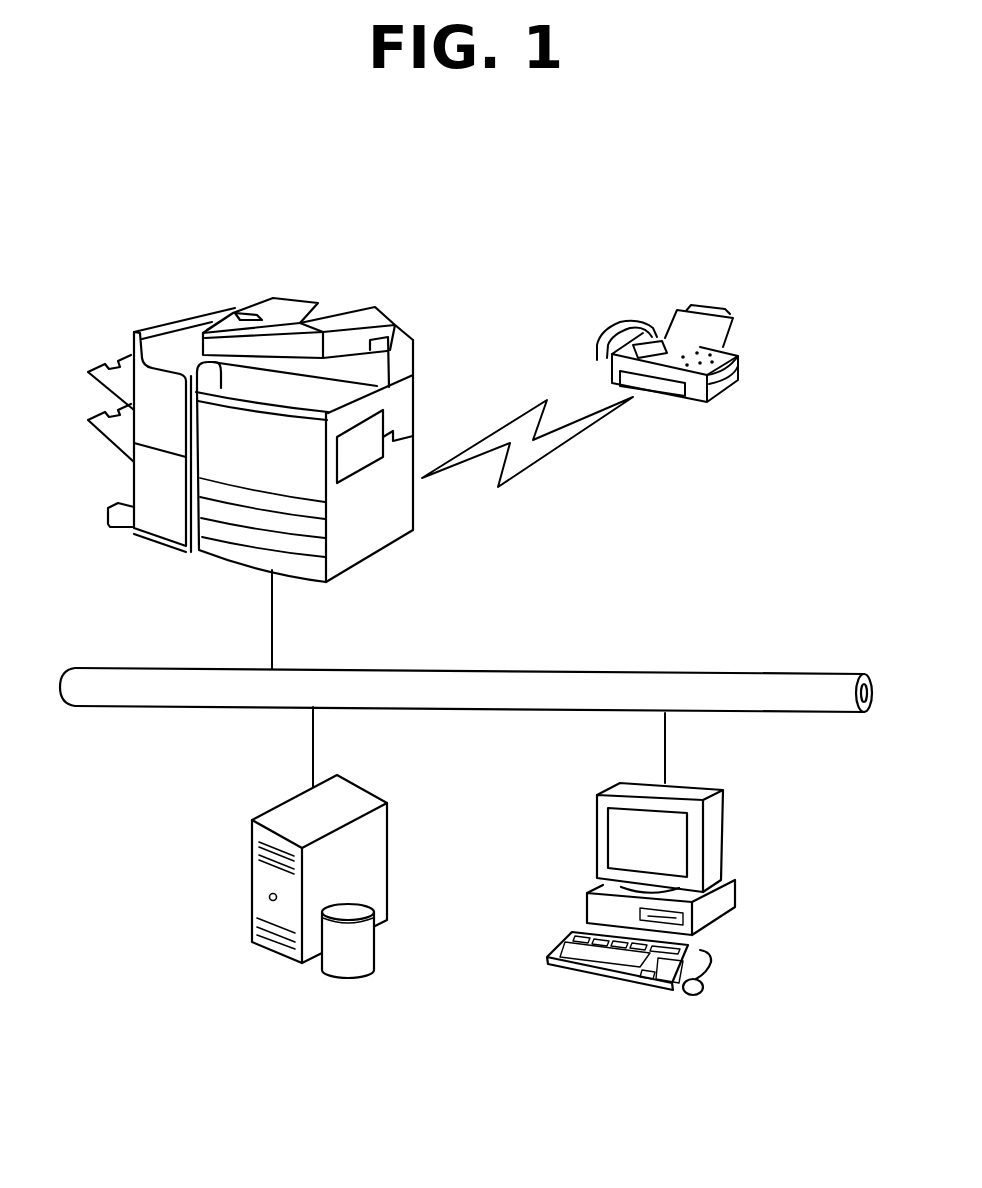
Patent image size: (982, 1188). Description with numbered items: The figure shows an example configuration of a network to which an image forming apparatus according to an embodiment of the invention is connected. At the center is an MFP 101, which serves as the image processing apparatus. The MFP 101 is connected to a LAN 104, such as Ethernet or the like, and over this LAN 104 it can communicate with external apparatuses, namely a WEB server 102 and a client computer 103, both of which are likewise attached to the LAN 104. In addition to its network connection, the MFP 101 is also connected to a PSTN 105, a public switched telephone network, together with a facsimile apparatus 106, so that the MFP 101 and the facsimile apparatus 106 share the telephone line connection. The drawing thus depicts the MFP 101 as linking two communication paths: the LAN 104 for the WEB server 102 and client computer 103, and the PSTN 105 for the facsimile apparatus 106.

The MFP 101 is at (377, 306).
The WEB server 102 is at (275, 957).
The client computer 103 is at (593, 973).
The LAN 104 is at (798, 673).
The PSTN 105 is at (527, 405).
The facsimile apparatus 106 is at (720, 310).